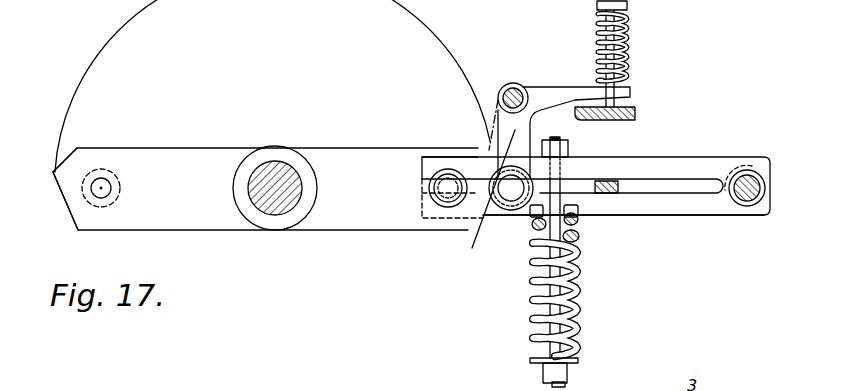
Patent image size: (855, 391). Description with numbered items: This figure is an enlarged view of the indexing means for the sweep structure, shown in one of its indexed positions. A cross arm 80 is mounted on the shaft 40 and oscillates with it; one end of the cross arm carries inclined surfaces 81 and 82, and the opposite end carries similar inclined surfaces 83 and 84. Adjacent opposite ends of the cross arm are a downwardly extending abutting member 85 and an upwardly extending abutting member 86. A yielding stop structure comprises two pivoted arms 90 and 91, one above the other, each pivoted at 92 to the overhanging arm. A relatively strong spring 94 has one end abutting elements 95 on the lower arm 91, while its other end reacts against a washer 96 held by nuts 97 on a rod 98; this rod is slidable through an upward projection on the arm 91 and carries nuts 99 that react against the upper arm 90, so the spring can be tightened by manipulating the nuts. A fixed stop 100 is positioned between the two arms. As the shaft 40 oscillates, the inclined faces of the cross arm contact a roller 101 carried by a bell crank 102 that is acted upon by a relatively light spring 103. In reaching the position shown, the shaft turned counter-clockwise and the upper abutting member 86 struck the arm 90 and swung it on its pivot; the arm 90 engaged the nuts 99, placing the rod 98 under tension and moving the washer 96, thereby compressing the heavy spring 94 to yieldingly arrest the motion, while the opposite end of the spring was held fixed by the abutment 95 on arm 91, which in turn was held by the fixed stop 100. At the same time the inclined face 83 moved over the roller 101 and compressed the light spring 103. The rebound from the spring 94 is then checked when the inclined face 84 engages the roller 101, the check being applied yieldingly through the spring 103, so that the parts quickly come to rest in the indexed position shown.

The shaft 40 is at (288, 170).
The cross arm 80 is at (233, 227).
The inclined surface 81 is at (63, 153).
The inclined surface 82 is at (68, 210).
The inclined surface 83 is at (477, 147).
The inclined surface 84 is at (492, 180).
The downwardly extending abutting member 85 is at (119, 179).
The upwardly extending abutting member 86 is at (430, 184).
The pivoted arm 90 is at (677, 165).
The pivoted arm 91 is at (663, 208).
The pivot 92 is at (745, 175).
The spring 94 is at (573, 278).
The abutment elements 95 is at (578, 216).
The washer 96 is at (578, 362).
The nuts 97 is at (545, 375).
The rod 98 is at (565, 385).
The nuts 99 is at (568, 152).
The fixed stop 100 is at (615, 181).
The roller 101 is at (516, 211).
The bell crank 102 is at (563, 70).
The spring 103 is at (627, 43).